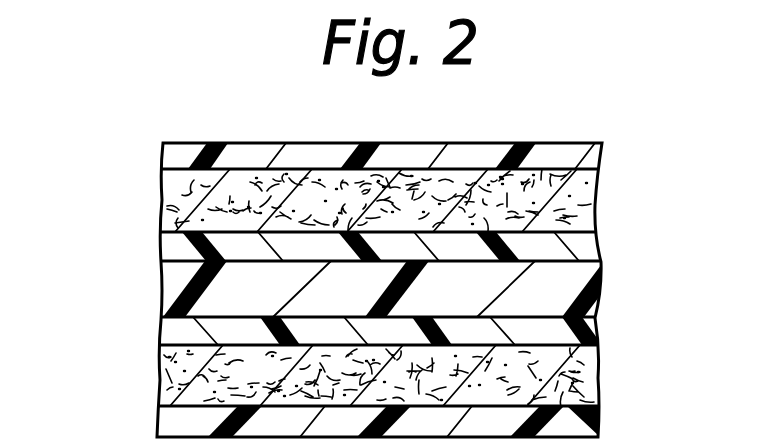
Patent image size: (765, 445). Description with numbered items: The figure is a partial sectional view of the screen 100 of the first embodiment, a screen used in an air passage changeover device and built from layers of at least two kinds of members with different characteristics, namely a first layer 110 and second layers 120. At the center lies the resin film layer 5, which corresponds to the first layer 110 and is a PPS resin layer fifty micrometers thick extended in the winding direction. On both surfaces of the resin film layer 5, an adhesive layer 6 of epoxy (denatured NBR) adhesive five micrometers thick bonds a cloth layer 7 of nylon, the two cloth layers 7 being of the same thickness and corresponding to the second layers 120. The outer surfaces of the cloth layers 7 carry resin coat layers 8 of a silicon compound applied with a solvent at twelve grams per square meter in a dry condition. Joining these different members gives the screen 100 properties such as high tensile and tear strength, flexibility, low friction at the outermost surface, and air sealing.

The screen 100 is at (173, 112).
The first layer 110 is at (135, 293).
The second layer 120 is at (145, 140).
The resin film layer 5 is at (578, 282).
The adhesive layer 6 is at (582, 245).
The cloth layer 7 is at (600, 213).
The resin coat layer 8 is at (592, 160).